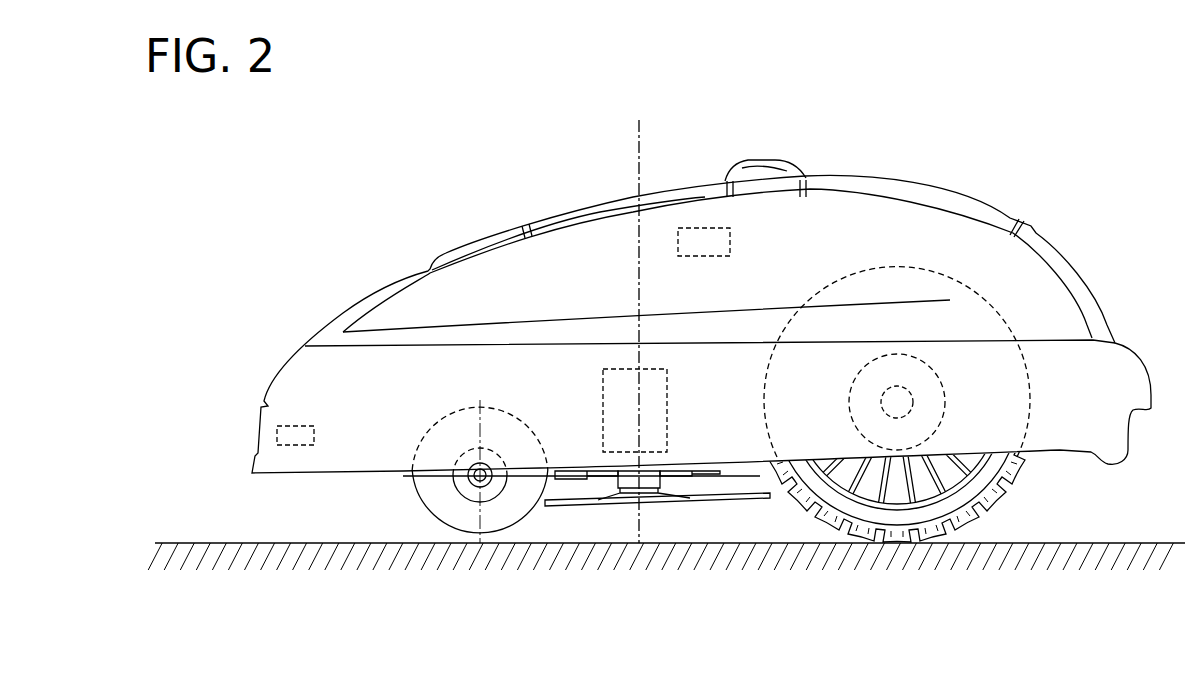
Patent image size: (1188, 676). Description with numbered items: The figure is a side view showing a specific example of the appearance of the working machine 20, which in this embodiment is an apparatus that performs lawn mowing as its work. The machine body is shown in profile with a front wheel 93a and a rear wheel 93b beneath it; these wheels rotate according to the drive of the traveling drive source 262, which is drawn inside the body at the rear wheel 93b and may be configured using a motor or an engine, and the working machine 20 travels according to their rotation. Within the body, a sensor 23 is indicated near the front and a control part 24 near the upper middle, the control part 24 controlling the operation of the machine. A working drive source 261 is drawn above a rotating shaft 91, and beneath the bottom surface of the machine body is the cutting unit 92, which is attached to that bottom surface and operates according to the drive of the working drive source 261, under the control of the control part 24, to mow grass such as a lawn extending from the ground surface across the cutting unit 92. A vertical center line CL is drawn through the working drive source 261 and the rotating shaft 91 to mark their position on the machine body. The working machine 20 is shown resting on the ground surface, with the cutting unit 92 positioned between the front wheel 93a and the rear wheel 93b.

The working machine 20 is at (356, 166).
The sensor 23 is at (314, 436).
The control part 24 is at (730, 241).
The working drive source 261 is at (667, 392).
The traveling drive source 262 is at (945, 404).
The rotating shaft 91 is at (653, 458).
The cutting unit 92 is at (718, 517).
The front wheel 93a is at (497, 527).
The rear wheel 93b is at (935, 515).
The center line CL is at (636, 358).